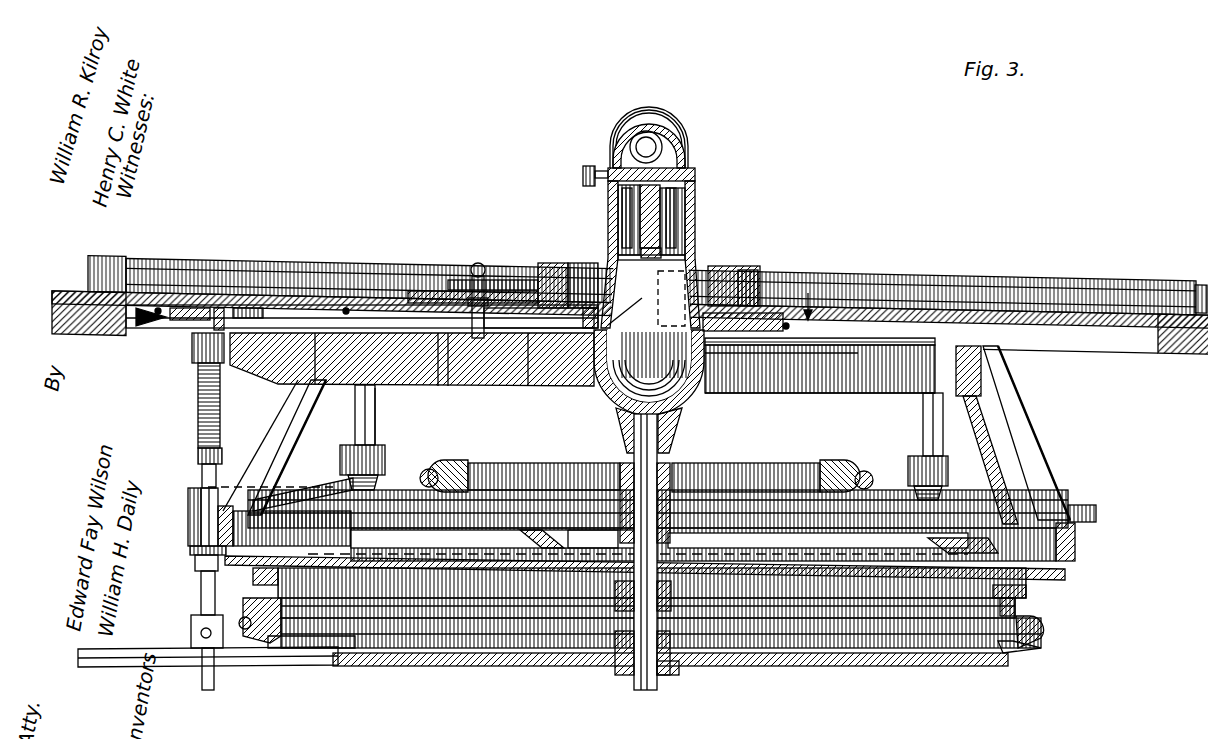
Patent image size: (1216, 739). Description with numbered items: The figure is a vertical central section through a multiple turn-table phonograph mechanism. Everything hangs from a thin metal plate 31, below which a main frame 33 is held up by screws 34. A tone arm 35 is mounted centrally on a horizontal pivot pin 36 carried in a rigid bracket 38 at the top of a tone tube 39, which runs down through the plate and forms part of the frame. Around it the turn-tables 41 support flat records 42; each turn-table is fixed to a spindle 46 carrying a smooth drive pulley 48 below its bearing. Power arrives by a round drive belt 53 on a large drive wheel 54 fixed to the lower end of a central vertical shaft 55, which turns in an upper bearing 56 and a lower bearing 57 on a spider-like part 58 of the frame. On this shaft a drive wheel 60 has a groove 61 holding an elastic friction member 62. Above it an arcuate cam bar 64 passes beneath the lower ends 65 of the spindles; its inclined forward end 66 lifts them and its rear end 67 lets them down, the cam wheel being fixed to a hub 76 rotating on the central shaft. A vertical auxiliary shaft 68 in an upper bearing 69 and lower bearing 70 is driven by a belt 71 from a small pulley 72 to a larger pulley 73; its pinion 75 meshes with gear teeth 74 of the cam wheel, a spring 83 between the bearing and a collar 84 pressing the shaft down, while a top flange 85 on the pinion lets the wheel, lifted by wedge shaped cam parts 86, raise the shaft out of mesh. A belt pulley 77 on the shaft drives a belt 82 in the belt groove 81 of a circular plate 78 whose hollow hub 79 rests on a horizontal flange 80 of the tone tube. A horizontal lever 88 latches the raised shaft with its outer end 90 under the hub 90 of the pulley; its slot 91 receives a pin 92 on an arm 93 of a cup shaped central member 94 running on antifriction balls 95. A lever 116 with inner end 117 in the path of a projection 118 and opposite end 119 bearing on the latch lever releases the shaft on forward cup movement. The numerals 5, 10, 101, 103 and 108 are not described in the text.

The bolt 5 is at (813, 306).
The bar 10 is at (362, 320).
The thin metal plate 31 is at (118, 282).
The main frame 33 is at (1008, 362).
The screws 34 is at (975, 250).
The tone arm 35 is at (680, 136).
The horizontal pivot pin 36 is at (688, 165).
The rigid bracket 38 is at (688, 202).
The tone tube 39 is at (694, 242).
The turn-tables 41 is at (637, 283).
The flat records 42 is at (315, 248).
The spindle 46 is at (362, 412).
The drive pulley 48 is at (1092, 484).
The drive belt 53 is at (240, 640).
The drive wheel 54 is at (262, 659).
The central vertical shaft 55 is at (650, 505).
The upper bearing 56 is at (626, 429).
The lower bearing 57 is at (655, 626).
The spider-like part 58 is at (612, 600).
The drive wheel 60 is at (472, 455).
The groove 61 is at (444, 452).
The friction member 62 is at (416, 462).
The cam bar 64 is at (638, 549).
The lower ends of spindles 65 is at (654, 539).
The forward end of cam bar 66 is at (963, 541).
The rear end of cam bar 67 is at (499, 536).
The vertical auxiliary shaft 68 is at (194, 464).
The upper bearing 69 is at (184, 340).
The lower bearing 70 is at (180, 516).
The belt 71 is at (406, 658).
The small pulley 72 is at (672, 660).
The pulley 73 is at (312, 658).
The gear teeth 74 is at (1080, 566).
The pinion 75 is at (187, 555).
The hub 76 is at (593, 547).
The belt pulley 77 is at (208, 310).
The circular plate 78 is at (755, 322).
The central hollow hub 79 is at (720, 262).
The horizontal flange 80 is at (820, 357).
The belt groove 81 is at (820, 373).
The belt 82 is at (820, 318).
The spring 83 is at (190, 400).
The collar 84 is at (190, 446).
The top flange 85 is at (312, 585).
The wedge shaped cam parts 86 is at (652, 593).
The horizontal lever 88 is at (420, 283).
The outer end of lever 90 is at (182, 300).
The transverse slot 91 is at (478, 287).
The pin 92 is at (484, 266).
The arm 93 is at (540, 255).
The cup shaped central member 94 is at (570, 255).
The antifriction balls 95 is at (582, 300).
The pawl 101 is at (146, 322).
The bolt 103 is at (612, 200).
The recess 108 is at (646, 300).
The lever 116 is at (492, 380).
The inner end of lever 117 is at (520, 380).
The projection 118 is at (480, 300).
The opposite end of lever 119 is at (407, 416).